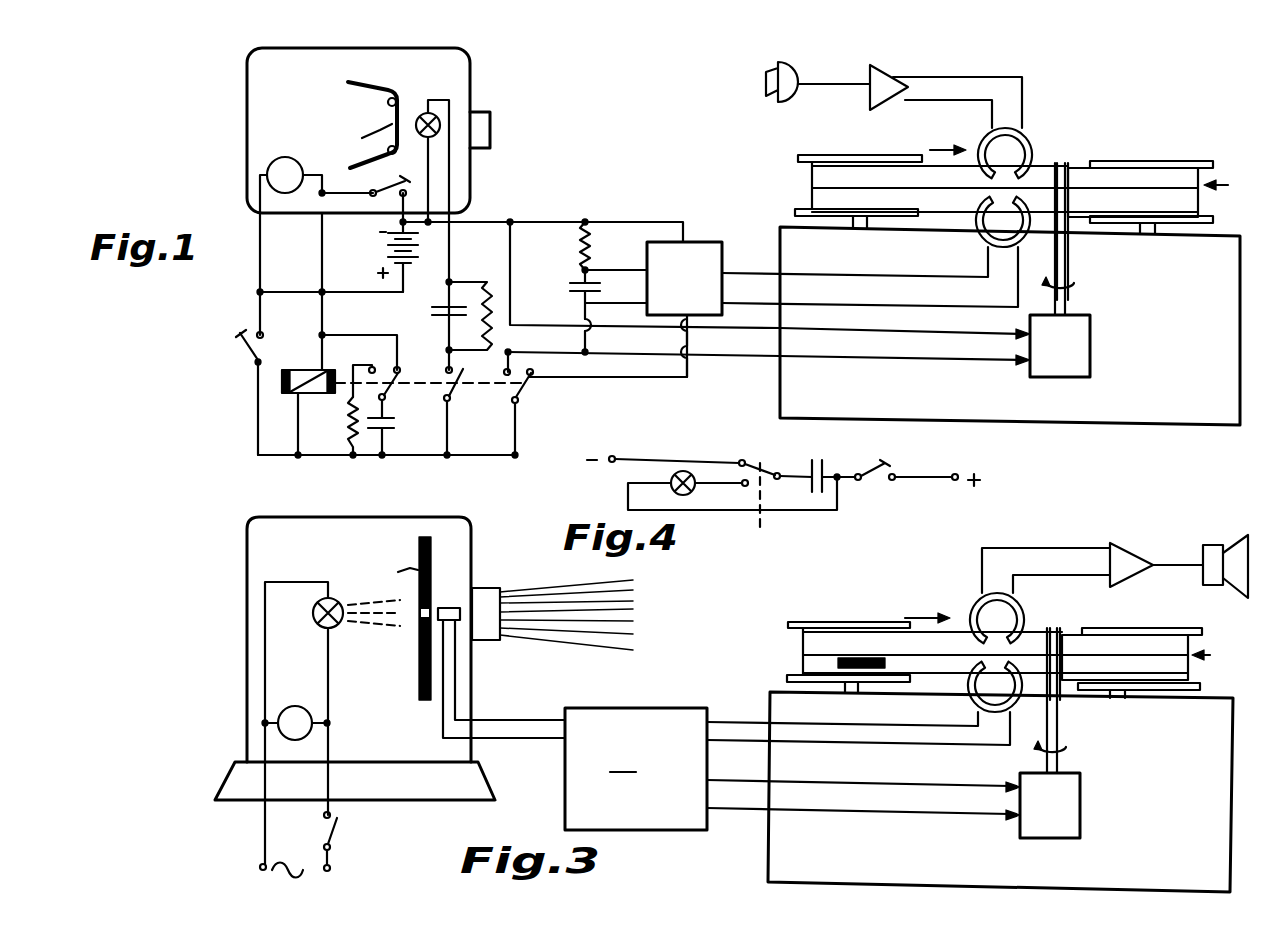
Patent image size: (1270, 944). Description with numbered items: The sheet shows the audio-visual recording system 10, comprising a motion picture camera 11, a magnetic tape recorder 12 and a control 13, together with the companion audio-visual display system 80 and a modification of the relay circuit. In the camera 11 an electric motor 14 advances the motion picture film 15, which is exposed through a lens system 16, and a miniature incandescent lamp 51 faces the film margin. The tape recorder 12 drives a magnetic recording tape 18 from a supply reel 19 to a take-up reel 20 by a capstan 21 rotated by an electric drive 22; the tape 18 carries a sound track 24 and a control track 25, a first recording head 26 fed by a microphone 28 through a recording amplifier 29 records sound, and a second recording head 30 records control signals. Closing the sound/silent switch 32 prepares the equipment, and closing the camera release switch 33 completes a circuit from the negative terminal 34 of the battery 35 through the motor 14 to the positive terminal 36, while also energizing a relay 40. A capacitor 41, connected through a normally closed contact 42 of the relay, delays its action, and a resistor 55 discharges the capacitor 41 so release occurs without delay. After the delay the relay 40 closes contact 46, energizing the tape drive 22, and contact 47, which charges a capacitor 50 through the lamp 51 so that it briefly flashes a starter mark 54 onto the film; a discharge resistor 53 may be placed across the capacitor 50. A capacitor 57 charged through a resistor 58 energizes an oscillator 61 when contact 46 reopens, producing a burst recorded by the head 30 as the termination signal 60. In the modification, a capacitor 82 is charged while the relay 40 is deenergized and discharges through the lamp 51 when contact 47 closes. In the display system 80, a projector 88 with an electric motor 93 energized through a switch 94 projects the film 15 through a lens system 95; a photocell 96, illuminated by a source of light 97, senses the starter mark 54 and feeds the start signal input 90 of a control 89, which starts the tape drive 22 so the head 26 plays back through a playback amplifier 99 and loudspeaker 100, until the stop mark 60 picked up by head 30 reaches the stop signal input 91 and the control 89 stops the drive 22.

In FIG. 1, the audio-visual recording system 10 is at (710, 197).
In FIG. 1, the motion picture camera 11 is at (262, 93).
In FIG. 1, the magnetic tape recorder 12 is at (1180, 364).
In FIG. 3, the magnetic tape recorder 12 is at (1155, 774).
In FIG. 1, the control 13 is at (305, 337).
In FIG. 1, the electric motor 14 is at (270, 162).
In FIG. 1, the motion picture film 15 is at (366, 84).
In FIG. 3, the motion picture film 15 is at (434, 562).
In FIG. 1, the lens system 16 is at (485, 112).
In FIG. 1, the magnetic recording tape 18 is at (1254, 200).
In FIG. 3, the magnetic recording tape 18 is at (1238, 671).
In FIG. 1, the supply reel 19 is at (896, 154).
In FIG. 3, the supply reel 19 is at (826, 620).
In FIG. 1, the take-up reel 20 is at (1166, 162).
In FIG. 3, the take-up reel 20 is at (1186, 634).
In FIG. 1, the capstan 21 is at (1074, 165).
In FIG. 3, the capstan 21 is at (1068, 633).
In FIG. 1, the electric drive 22 is at (1092, 330).
In FIG. 3, the electric drive 22 is at (1082, 810).
In FIG. 1, the sound track 24 is at (1150, 142).
In FIG. 3, the sound track 24 is at (1128, 640).
In FIG. 1, the control track 25 is at (1208, 208).
In FIG. 3, the control track 25 is at (1150, 680).
In FIG. 1, the first magnetic recording head 26 is at (1028, 140).
In FIG. 3, the first magnetic recording head 26 is at (972, 608).
In FIG. 1, the microphone 28 is at (788, 104).
In FIG. 1, the recording amplifier 29 is at (870, 97).
In FIG. 1, the second recording head 30 is at (976, 228).
In FIG. 3, the second recording head 30 is at (970, 706).
In FIG. 1, the switch 32 is at (252, 364).
In FIG. 4, the switch 32 is at (866, 480).
In FIG. 1, the switch 33 is at (397, 176).
In FIG. 1, the negative terminal 34 is at (392, 233).
In FIG. 4, the negative terminal 34 is at (617, 444).
In FIG. 1, the battery 35 is at (385, 252).
In FIG. 1, the positive terminal 36 is at (404, 277).
In FIG. 4, the positive terminal 36 is at (954, 482).
In FIG. 1, the relay 40 is at (286, 394).
In FIG. 4, the relay 40 is at (767, 510).
In FIG. 1, the capacitor 41 is at (390, 430).
In FIG. 1, the normally closed contact 42 is at (387, 400).
In FIG. 1, the contact 46 is at (525, 398).
In FIG. 1, the contact 47 is at (452, 402).
In FIG. 4, the contact 47 is at (748, 460).
In FIG. 1, the capacitor 50 is at (431, 310).
In FIG. 1, the miniature incandescent lamp 51 is at (447, 98).
In FIG. 4, the miniature incandescent lamp 51 is at (672, 490).
In FIG. 1, the discharge resistor 53 is at (492, 278).
In FIG. 1, the resistor 55 is at (348, 424).
In FIG. 1, the capacitor 57 is at (572, 287).
In FIG. 1, the resistor 58 is at (590, 246).
In FIG. 1, the oscillator 61 is at (722, 258).
In FIG. 3, the starter mark 54 is at (420, 613).
In FIG. 3, the termination signal 60 is at (858, 658).
In FIG. 3, the audio-visual display system 80 is at (748, 667).
In FIG. 4, the capacitor 82 is at (812, 468).
In FIG. 3, the projector 88 is at (240, 552).
In FIG. 3, the control 89 is at (792, 769).
In FIG. 3, the start signal input 90 is at (565, 710).
In FIG. 3, the stop signal input 91 is at (712, 720).
In FIG. 3, the electric motor 93 is at (316, 728).
In FIG. 3, the switch 94 is at (336, 833).
In FIG. 3, the lens system 95 is at (486, 590).
In FIG. 3, the photocell 96 is at (446, 607).
In FIG. 3, the source of light 97 is at (314, 618).
In FIG. 3, the playback amplifier 99 is at (1126, 542).
In FIG. 3, the loudspeaker 100 is at (1214, 544).